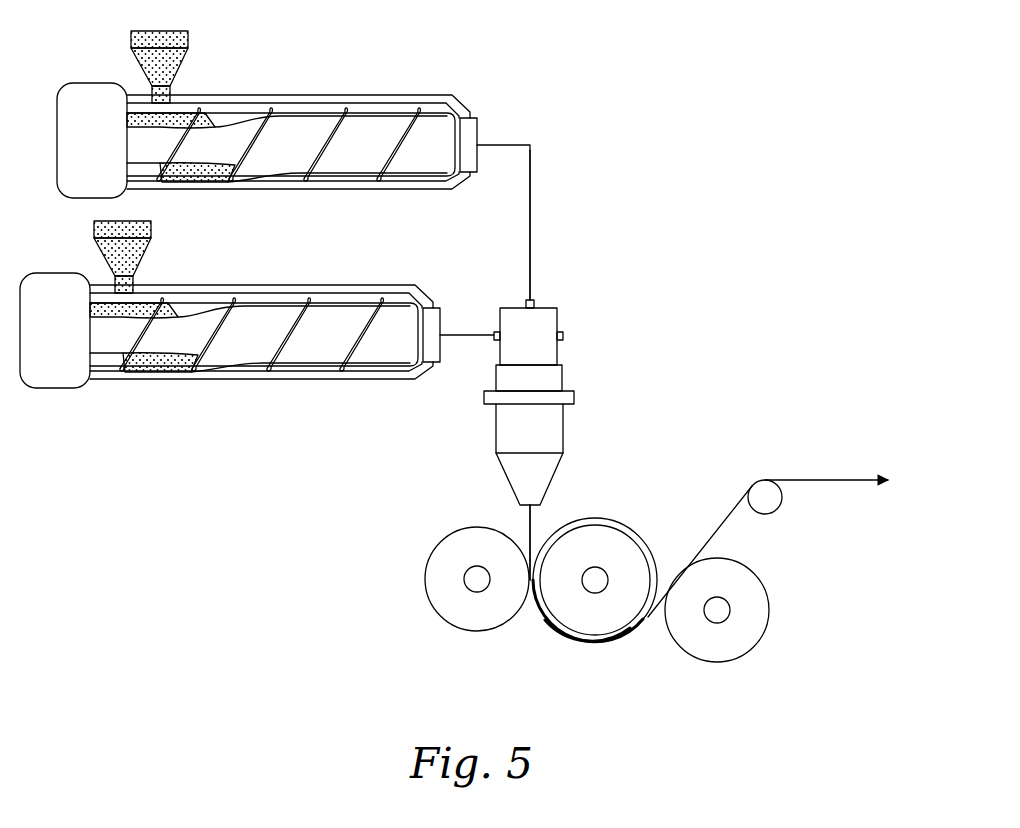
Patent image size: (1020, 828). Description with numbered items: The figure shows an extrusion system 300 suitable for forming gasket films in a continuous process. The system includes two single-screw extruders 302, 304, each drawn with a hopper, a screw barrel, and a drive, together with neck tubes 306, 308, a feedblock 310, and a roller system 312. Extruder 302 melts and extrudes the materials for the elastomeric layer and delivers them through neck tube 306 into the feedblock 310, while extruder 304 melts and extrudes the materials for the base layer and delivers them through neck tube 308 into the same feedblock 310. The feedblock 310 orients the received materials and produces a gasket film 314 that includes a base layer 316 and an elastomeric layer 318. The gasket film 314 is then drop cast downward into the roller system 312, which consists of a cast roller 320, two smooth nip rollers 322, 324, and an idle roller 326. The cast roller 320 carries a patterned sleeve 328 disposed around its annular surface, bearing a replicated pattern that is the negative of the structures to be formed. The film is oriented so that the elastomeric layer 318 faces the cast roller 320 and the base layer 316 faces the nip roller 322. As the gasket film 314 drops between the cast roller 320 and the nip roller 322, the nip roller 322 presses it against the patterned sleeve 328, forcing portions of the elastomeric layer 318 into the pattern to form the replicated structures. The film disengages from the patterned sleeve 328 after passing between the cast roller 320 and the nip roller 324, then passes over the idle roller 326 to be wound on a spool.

The extrusion system 300 is at (591, 106).
The extruder 302 is at (368, 128).
The extruder 304 is at (332, 322).
The neck tube 306 is at (533, 213).
The neck tube 308 is at (470, 338).
The feedblock 310 is at (555, 380).
The roller system 312 is at (417, 563).
The gasket film 314 is at (520, 512).
The base layer 316 is at (527, 525).
The elastomeric layer 318 is at (533, 537).
The cast roller 320 is at (603, 612).
The nip roller 322 is at (455, 614).
The nip roller 324 is at (748, 636).
The idle roller 326 is at (772, 503).
The patterned sleeve 328 is at (583, 640).